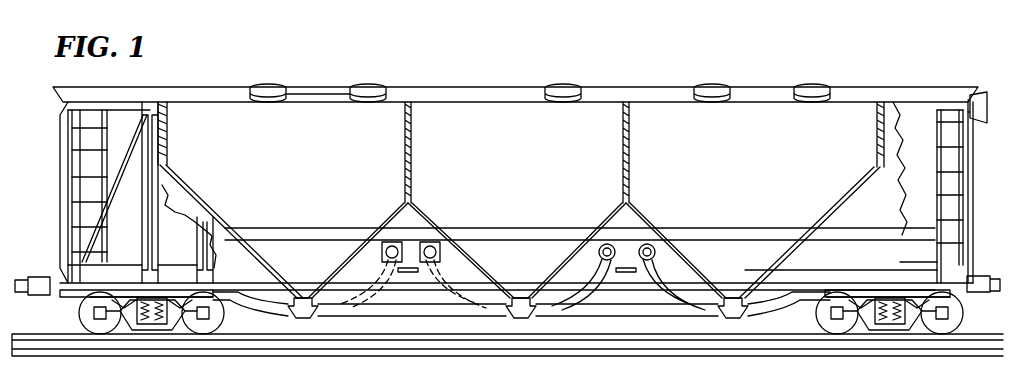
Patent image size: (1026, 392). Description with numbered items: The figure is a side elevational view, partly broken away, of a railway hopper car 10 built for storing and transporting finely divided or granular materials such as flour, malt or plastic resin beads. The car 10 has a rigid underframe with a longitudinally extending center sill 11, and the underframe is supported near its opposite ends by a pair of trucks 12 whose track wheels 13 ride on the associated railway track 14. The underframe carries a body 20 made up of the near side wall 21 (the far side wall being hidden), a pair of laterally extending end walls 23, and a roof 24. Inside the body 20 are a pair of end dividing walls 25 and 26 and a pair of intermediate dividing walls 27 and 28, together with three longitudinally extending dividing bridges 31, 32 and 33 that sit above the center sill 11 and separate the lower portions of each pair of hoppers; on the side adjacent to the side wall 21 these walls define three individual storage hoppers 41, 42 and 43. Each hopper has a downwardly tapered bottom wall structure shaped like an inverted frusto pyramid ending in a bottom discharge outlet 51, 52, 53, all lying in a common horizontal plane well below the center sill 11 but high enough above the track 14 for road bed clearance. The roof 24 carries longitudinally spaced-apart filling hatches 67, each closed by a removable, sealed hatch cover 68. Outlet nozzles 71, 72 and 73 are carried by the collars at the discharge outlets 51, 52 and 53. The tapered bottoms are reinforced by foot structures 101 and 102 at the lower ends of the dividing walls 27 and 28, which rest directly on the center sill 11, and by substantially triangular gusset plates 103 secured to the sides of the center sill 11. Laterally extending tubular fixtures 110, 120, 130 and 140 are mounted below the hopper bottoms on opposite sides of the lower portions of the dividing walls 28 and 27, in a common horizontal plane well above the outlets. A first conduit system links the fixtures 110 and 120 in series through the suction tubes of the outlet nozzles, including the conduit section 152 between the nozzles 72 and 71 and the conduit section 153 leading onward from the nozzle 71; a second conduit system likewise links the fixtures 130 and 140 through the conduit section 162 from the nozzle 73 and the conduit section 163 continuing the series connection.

The railway hopper car 10 is at (51, 150).
The center sill 11 is at (815, 270).
The trucks 12 is at (152, 332).
The track wheels 13 is at (90, 320).
The railway track 14 is at (612, 345).
The body 20 is at (53, 197).
The side wall 21 is at (180, 250).
The end walls 23 is at (975, 205).
The roof 24 is at (183, 98).
The end dividing wall 25 is at (167, 140).
The end dividing wall 26 is at (877, 140).
The intermediate dividing wall 27 is at (411, 140).
The intermediate dividing wall 28 is at (629, 145).
The dividing bridge 31 is at (265, 228).
The dividing bridge 32 is at (512, 228).
The dividing bridge 33 is at (725, 232).
The storage hopper 41 is at (300, 270).
The storage hopper 42 is at (523, 270).
The storage hopper 43 is at (728, 263).
The bottom discharge outlet 51 is at (305, 298).
The bottom discharge outlet 52 is at (521, 298).
The bottom discharge outlet 53 is at (733, 298).
The filling hatches 67 is at (318, 93).
The hatch cover 68 is at (270, 88).
The outlet nozzle 71 is at (305, 318).
The outlet nozzle 72 is at (521, 318).
The outlet nozzle 73 is at (733, 318).
The foot structure 101 is at (407, 272).
The foot structure 102 is at (622, 272).
The gusset plates 103 is at (395, 226).
The first tubular fixture 110 is at (599, 252).
The second tubular fixture 120 is at (382, 252).
The third tubular fixture 130 is at (665, 245).
The fourth tubular fixture 140 is at (440, 252).
The conduit section 152 is at (400, 316).
The conduit section 153 is at (230, 308).
The conduit section 162 is at (788, 314).
The conduit section 163 is at (628, 316).